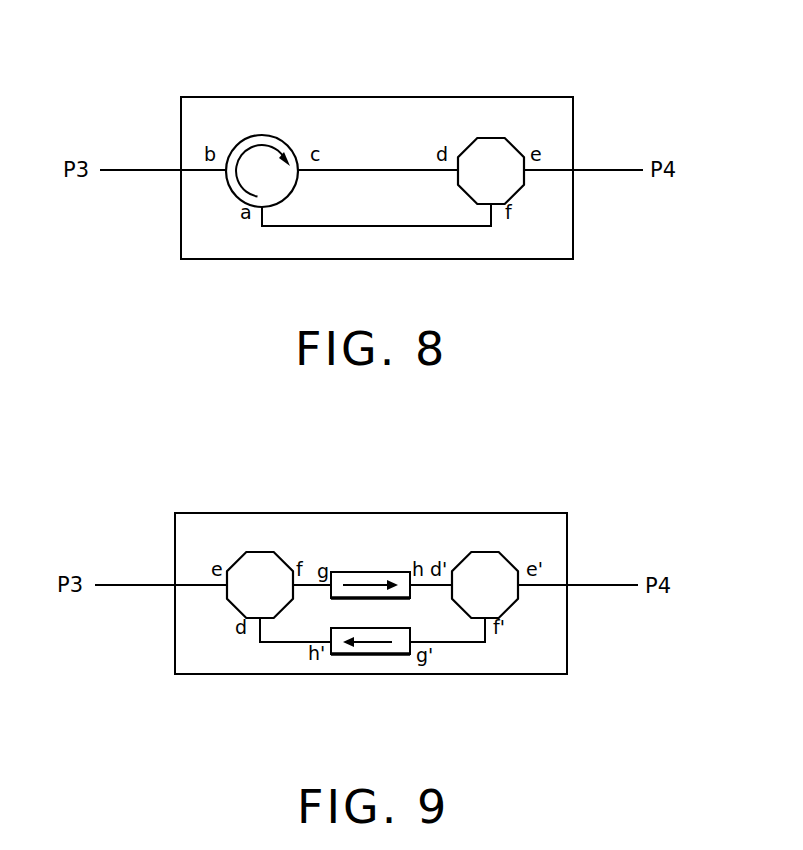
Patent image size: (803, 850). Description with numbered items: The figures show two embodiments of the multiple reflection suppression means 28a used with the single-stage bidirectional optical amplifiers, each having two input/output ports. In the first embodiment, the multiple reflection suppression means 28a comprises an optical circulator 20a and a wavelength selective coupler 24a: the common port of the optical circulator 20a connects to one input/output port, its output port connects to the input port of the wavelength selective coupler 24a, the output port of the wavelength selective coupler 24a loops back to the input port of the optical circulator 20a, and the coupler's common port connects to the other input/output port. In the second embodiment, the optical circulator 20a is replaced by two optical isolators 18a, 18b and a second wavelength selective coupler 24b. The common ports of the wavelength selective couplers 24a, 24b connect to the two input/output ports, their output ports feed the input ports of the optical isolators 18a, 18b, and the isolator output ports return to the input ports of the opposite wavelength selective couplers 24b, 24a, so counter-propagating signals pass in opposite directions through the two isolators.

In FIG. 8, the optical circulator 20a is at (262, 135).
In FIG. 8, the wavelength selective coupler 24a is at (491, 138).
In FIG. 9, the wavelength selective coupler 24a is at (260, 552).
In FIG. 9, the wavelength selective coupler 24b is at (485, 552).
In FIG. 9, the optical isolator 18a is at (360, 572).
In FIG. 9, the optical isolator 18b is at (381, 655).
In FIG. 8, the multiple reflection suppression means 28a is at (535, 97).
In FIG. 9, the multiple reflection suppression means 28a is at (528, 513).